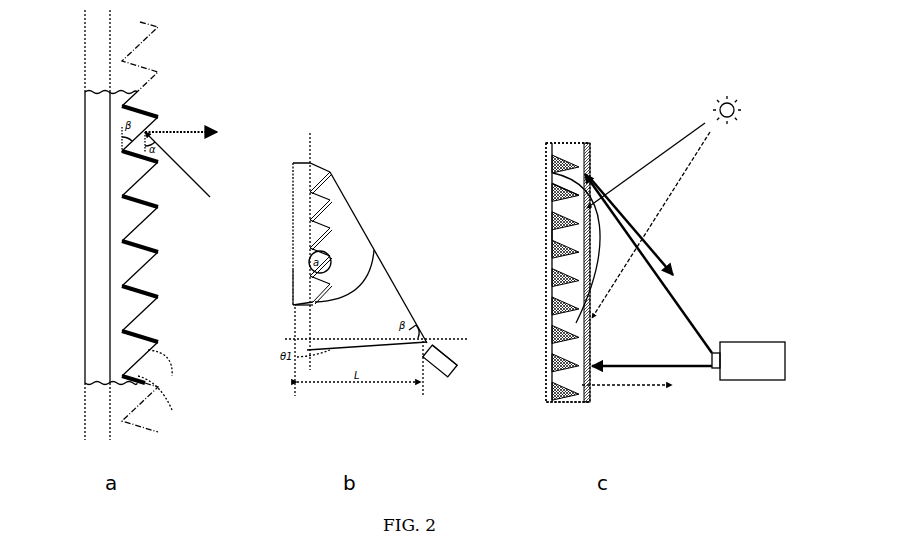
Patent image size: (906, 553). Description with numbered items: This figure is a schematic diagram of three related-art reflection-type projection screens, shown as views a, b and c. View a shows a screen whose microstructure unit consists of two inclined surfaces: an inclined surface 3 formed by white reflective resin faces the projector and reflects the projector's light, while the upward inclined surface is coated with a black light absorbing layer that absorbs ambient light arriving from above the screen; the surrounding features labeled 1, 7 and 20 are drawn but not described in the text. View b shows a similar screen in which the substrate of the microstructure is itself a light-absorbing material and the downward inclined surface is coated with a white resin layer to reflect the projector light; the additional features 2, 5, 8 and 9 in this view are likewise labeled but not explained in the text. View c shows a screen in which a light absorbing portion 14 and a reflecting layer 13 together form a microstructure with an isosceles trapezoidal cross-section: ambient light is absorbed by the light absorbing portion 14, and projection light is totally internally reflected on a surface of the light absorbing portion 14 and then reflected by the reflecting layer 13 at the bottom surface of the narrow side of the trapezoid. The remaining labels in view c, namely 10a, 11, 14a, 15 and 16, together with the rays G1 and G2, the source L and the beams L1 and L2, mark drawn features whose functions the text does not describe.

The glass plate / solar panel 1 is at (80, 388).
The lower edge of panel 2 is at (293, 284).
The inclined surface 3 is at (737, 104).
The bottom edge 5 is at (310, 318).
The rear surface of glass 7 is at (95, 168).
The reflected ray 8 is at (367, 258).
The light sensor 9 is at (457, 361).
The panel bottom 10a is at (592, 396).
The panel top 11 is at (588, 143).
The reflecting layer 13 is at (551, 237).
The light absorbing portion 14 is at (562, 177).
The prism tooth face 14a is at (558, 197).
The outer wall 15 is at (546, 151).
The hatched layer 16 is at (590, 149).
The glass plate 20 is at (110, 222).
The sunlight ray 1 G1 is at (657, 146).
The sunlight ray 2 G2 is at (666, 202).
The laser L is at (753, 343).
The laser beam 1 L1 is at (683, 307).
The laser beam 2 L2 is at (676, 363).